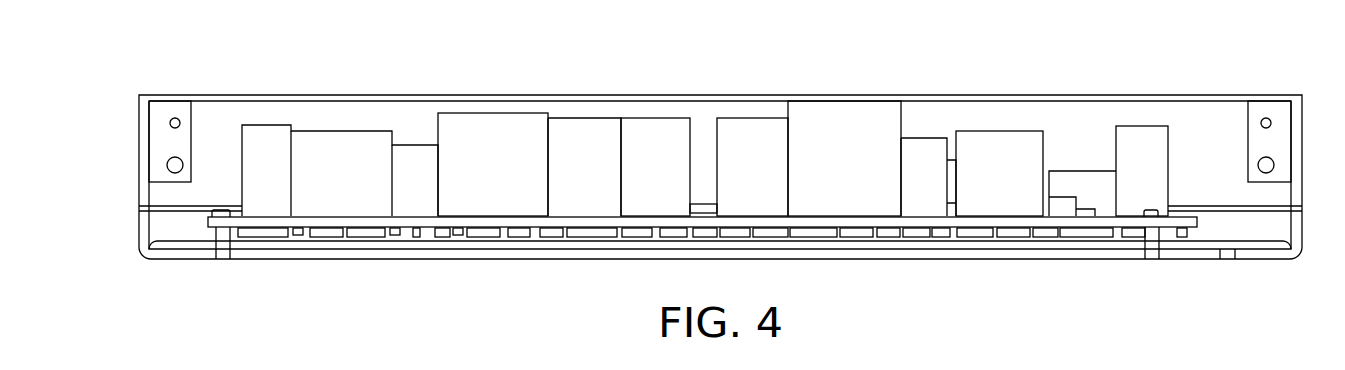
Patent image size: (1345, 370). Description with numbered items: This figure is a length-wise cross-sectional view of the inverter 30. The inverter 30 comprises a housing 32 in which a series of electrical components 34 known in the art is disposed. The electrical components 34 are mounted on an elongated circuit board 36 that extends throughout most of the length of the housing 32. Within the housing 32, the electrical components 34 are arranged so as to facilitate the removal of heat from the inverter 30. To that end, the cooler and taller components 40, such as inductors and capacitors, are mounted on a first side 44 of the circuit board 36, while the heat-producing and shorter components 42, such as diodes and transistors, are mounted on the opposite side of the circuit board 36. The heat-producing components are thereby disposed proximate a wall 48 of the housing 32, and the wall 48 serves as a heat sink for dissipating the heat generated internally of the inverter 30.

The inverter 30 is at (258, 79).
The housing 32 is at (322, 95).
The electrical components 34 is at (840, 142).
The circuit board 36 is at (1197, 228).
The cooler and taller components 40 is at (484, 142).
The heat-producing and shorter components 42 is at (417, 237).
The first side of the circuit board 44 is at (325, 237).
The wall of the housing 48 is at (827, 276).